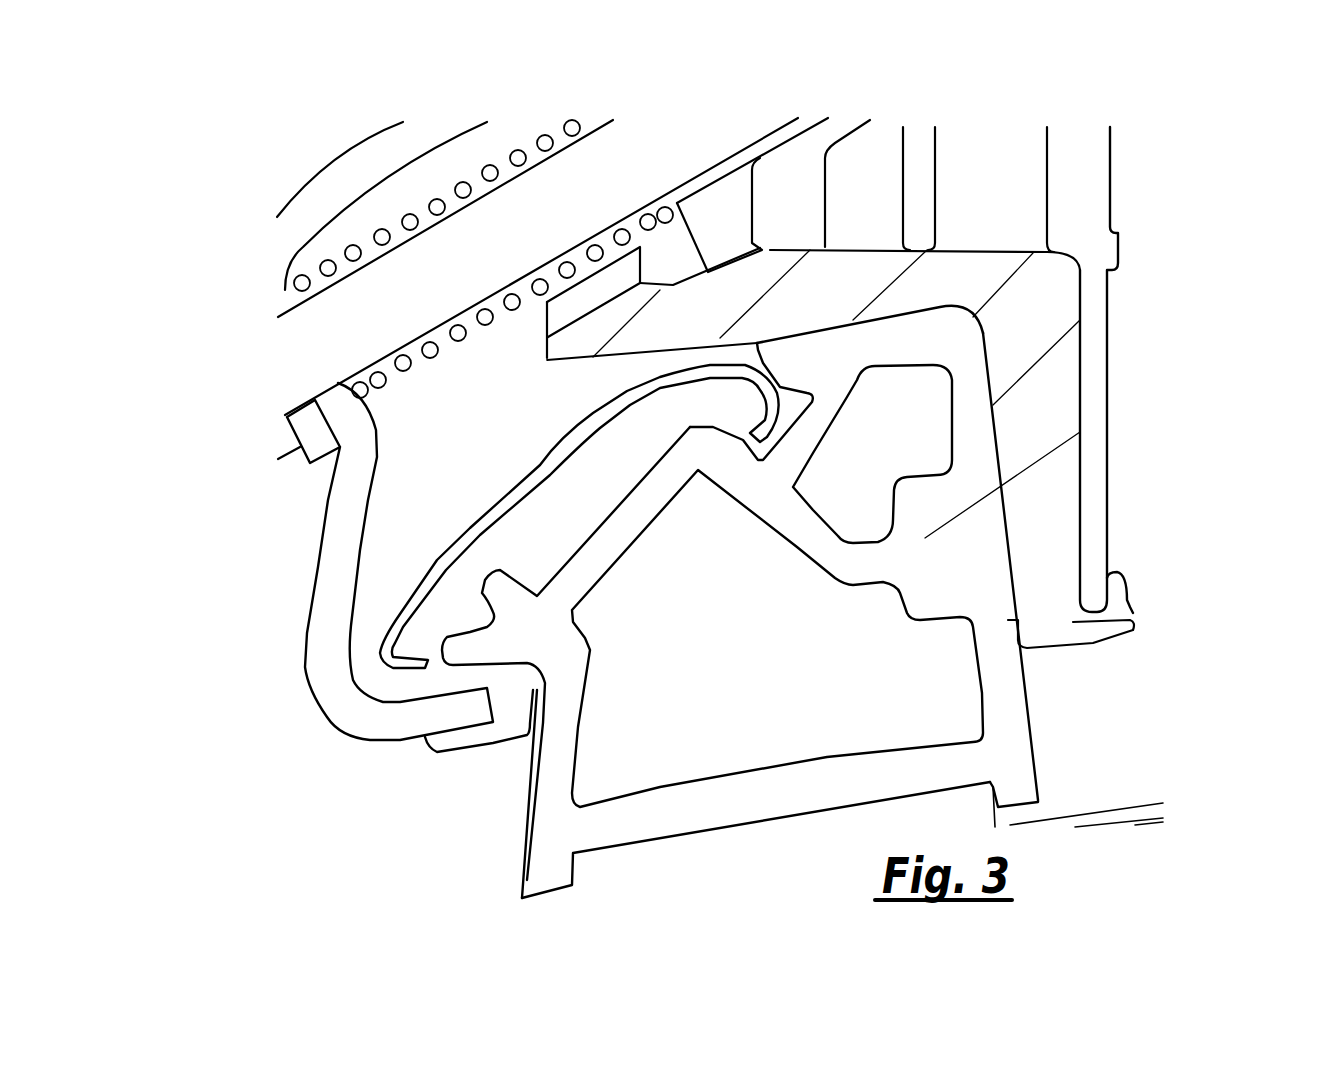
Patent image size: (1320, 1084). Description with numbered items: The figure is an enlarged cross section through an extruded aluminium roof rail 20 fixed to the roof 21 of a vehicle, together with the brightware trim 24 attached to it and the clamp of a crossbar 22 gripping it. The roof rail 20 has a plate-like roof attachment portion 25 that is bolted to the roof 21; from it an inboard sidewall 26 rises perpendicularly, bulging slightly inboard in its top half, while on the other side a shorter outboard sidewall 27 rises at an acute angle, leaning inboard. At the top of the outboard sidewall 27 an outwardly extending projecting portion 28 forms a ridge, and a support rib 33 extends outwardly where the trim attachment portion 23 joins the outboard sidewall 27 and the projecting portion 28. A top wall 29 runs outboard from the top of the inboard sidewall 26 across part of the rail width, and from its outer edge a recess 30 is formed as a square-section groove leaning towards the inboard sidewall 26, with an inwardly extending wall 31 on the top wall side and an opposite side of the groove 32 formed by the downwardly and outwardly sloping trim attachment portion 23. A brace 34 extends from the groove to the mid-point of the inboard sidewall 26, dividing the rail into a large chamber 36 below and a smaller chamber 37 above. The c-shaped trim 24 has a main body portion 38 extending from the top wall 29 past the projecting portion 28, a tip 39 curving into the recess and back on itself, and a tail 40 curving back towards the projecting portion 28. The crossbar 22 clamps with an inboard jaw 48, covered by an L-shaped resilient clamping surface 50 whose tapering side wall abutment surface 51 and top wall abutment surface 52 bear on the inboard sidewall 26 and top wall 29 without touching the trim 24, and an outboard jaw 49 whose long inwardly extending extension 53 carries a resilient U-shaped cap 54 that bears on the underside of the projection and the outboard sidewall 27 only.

The roof rail 20 is at (1013, 608).
The roof 21 is at (1150, 812).
The crossbar 22 is at (1100, 167).
The trim attachment portion 23 is at (585, 557).
The trim 24 is at (442, 633).
The roof attachment portion 25 is at (755, 799).
The inboard sidewall 26 is at (990, 590).
The outboard sidewall 27 is at (547, 758).
The outwardly extending projecting portion 28 is at (493, 643).
The top wall 29 is at (877, 343).
The recess 30 is at (797, 442).
The inwardly extending wall 31 is at (810, 388).
The opposite side of the groove 32 is at (763, 463).
The support rib 33 is at (427, 593).
The brace 34 is at (807, 547).
The large chamber 36 is at (777, 638).
The smaller chamber 37 is at (872, 454).
The main body portion 38 is at (533, 452).
The tip 39 is at (720, 367).
The tail 40 is at (433, 660).
The inboard jaw 48 is at (1094, 370).
The outboard jaw 49 is at (350, 717).
The resilient clamping surface 50 is at (800, 277).
The side wall abutment surface 51 is at (1137, 613).
The top wall abutment surface 52 is at (838, 270).
The inwardly extending extension 53 is at (393, 733).
The resilient U-shaped cap 54 is at (510, 665).